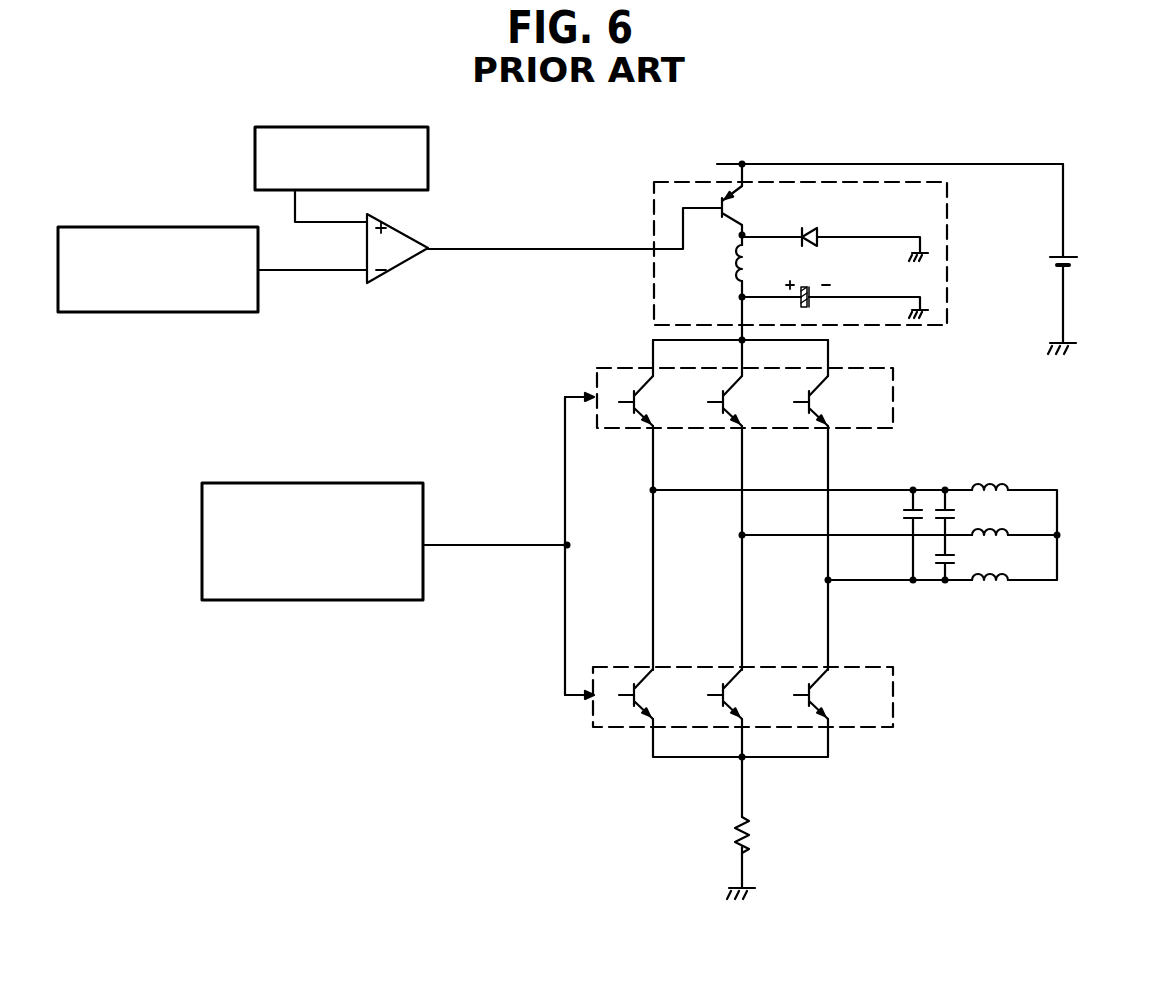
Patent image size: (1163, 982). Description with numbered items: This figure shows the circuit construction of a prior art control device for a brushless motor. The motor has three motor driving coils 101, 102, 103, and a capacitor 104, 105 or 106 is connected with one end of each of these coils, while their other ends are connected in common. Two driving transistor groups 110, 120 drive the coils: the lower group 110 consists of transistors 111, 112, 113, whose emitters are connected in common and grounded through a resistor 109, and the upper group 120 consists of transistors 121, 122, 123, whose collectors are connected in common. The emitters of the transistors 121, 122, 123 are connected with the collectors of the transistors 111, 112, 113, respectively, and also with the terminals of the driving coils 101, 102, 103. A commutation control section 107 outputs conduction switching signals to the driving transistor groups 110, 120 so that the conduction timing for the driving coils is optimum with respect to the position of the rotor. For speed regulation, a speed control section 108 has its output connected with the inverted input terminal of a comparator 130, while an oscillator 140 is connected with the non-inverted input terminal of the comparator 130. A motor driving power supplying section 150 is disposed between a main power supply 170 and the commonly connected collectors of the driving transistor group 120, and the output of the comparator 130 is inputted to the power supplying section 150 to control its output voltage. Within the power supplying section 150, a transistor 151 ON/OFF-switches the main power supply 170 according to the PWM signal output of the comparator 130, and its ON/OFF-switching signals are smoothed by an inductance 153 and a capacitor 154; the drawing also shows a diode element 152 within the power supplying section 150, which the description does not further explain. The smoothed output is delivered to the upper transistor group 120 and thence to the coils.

The motor driving coil 101 is at (1005, 487).
The motor driving coil 102 is at (1005, 532).
The motor driving coil 103 is at (1003, 584).
The capacitor 104 is at (952, 505).
The capacitor 105 is at (953, 566).
The capacitor 106 is at (904, 513).
The commutation control section 107 is at (332, 483).
The speed control section 108 is at (172, 312).
The resistor 109 is at (735, 837).
The driving transistor group 110 is at (893, 700).
The transistor 111 is at (653, 699).
The transistor 112 is at (730, 700).
The transistor 113 is at (822, 700).
The driving transistor group 120 is at (893, 408).
The transistor 121 is at (648, 406).
The transistor 122 is at (730, 404).
The transistor 123 is at (822, 404).
The comparator 130 is at (404, 258).
The oscillator 140 is at (429, 167).
The motor driving power supplying section 150 is at (654, 222).
The transistor 151 is at (736, 201).
The diode 152 is at (813, 227).
The inductance 153 is at (736, 265).
The capacitor 154 is at (807, 283).
The main power supply 170 is at (1079, 258).